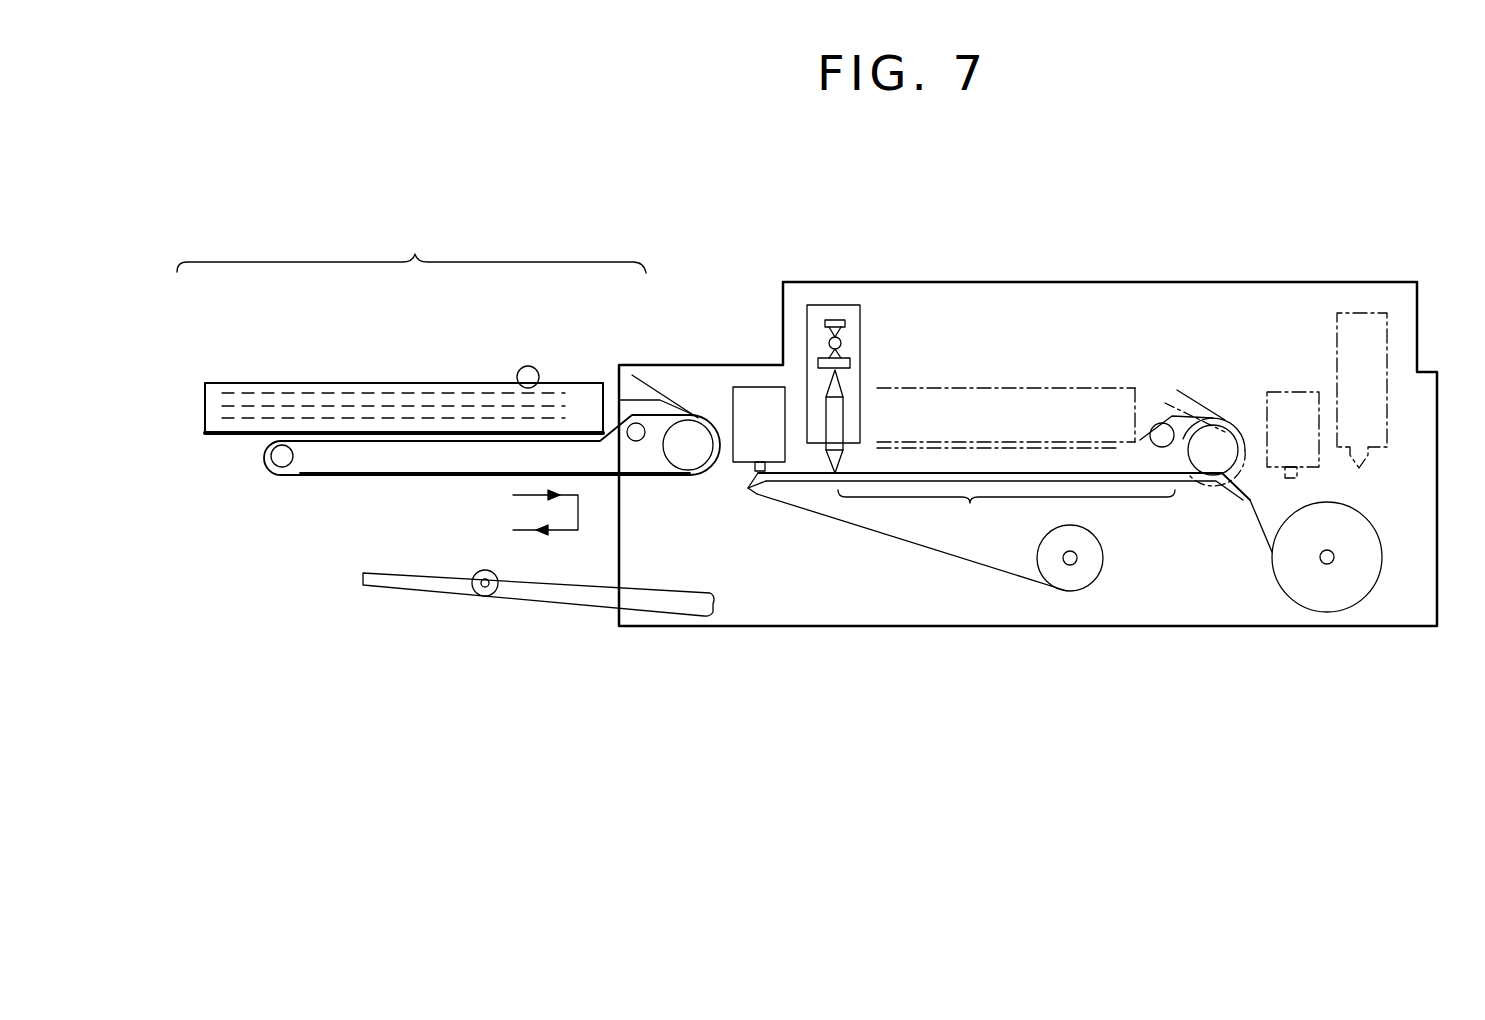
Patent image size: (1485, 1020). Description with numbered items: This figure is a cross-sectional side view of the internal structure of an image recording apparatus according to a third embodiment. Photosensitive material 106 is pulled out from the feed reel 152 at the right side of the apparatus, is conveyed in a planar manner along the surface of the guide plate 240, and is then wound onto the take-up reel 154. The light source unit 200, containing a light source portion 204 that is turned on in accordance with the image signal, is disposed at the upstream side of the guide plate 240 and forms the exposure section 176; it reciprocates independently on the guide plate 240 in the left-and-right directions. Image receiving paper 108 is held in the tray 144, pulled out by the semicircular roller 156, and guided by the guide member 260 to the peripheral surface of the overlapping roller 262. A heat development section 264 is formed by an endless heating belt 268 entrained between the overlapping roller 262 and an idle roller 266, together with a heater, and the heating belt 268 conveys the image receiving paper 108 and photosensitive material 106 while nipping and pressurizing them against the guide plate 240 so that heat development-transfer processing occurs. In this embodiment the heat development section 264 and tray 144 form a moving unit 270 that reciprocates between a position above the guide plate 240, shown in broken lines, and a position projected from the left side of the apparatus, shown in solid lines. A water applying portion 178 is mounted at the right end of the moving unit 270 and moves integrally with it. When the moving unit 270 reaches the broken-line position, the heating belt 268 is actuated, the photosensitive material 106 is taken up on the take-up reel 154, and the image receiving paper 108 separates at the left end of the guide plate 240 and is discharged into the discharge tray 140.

The moving unit 270 is at (411, 244).
The tray 144 is at (205, 392).
The image receiving paper 108 is at (285, 390).
The semicircular roller 156 is at (537, 373).
The guide member 260 is at (655, 398).
The water applying portion 178 is at (763, 387).
The light source unit 200 is at (853, 305).
The light source portion 204 is at (848, 322).
The guide plate 240 is at (1120, 478).
The exposure section 176 is at (999, 508).
The idle roller 266 is at (283, 467).
The heat development section 264 is at (378, 464).
The heating belt 268 is at (448, 473).
The overlapping roller 262 is at (690, 458).
The discharge tray 140 is at (430, 575).
The take-up reel 154 is at (1078, 588).
The photosensitive material 106 is at (1262, 533).
The feed reel 152 is at (1335, 557).